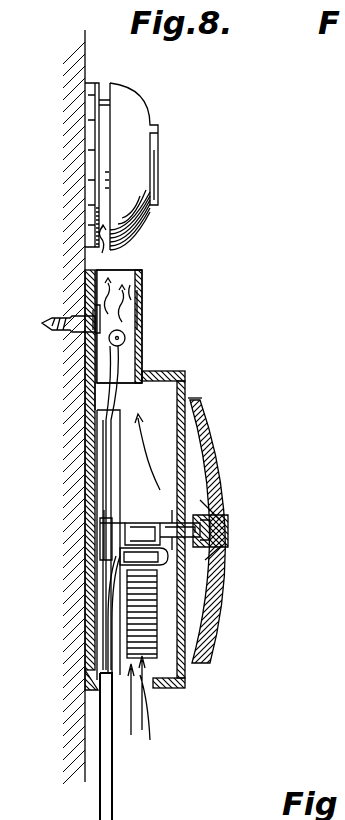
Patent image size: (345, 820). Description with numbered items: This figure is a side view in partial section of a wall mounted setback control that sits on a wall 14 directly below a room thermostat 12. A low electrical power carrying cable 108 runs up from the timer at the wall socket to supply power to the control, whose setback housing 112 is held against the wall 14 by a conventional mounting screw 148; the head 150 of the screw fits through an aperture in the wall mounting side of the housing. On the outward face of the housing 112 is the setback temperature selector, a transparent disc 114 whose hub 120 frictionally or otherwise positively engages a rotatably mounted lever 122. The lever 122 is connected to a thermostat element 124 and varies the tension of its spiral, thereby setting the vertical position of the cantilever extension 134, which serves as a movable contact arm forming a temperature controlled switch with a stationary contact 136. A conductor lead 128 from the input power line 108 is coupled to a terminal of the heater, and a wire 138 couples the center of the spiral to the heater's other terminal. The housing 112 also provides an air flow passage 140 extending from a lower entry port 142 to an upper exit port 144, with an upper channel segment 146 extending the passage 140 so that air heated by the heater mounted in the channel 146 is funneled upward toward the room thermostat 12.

The room thermostat 12 is at (132, 110).
The wall 14 is at (87, 69).
The low electrical power carrying cable 108 is at (108, 783).
The setback housing 112 is at (187, 376).
The transparent disc 114 is at (223, 608).
The hub 120 is at (227, 478).
The lever 122 is at (175, 520).
The thermostat element 124 is at (158, 623).
The conductor lead 128 is at (95, 388).
The cantilever extension 134 is at (130, 523).
The stationary contact 136 is at (130, 553).
The wire 138 is at (125, 338).
The air flow passage 140 is at (195, 398).
The lower entry port 142 is at (147, 687).
The upper exit port 144 is at (125, 276).
The upper channel segment 146 is at (142, 318).
The mounting screw 148 is at (82, 373).
The head 150 is at (97, 303).